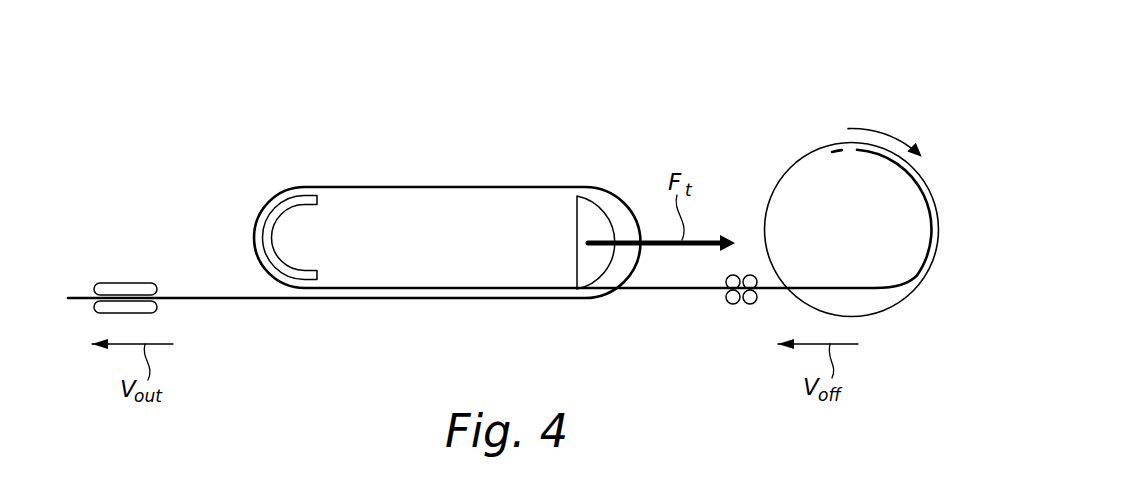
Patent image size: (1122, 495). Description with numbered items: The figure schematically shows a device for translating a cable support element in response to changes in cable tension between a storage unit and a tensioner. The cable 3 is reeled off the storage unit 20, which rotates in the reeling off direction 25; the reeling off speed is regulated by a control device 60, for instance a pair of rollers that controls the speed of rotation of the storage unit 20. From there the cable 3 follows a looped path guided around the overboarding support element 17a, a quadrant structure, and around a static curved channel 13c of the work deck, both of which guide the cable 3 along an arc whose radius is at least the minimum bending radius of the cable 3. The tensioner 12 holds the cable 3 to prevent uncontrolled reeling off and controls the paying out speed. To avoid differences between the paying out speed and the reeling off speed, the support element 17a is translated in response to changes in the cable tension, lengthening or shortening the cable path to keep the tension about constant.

The cable 3 is at (647, 292).
The tensioner 12 is at (125, 290).
The curved channel 13c is at (273, 219).
The overboarding support element 17a is at (586, 258).
The storage unit 20 is at (797, 152).
The reeling off direction 25 is at (888, 132).
The control device 60 is at (737, 308).